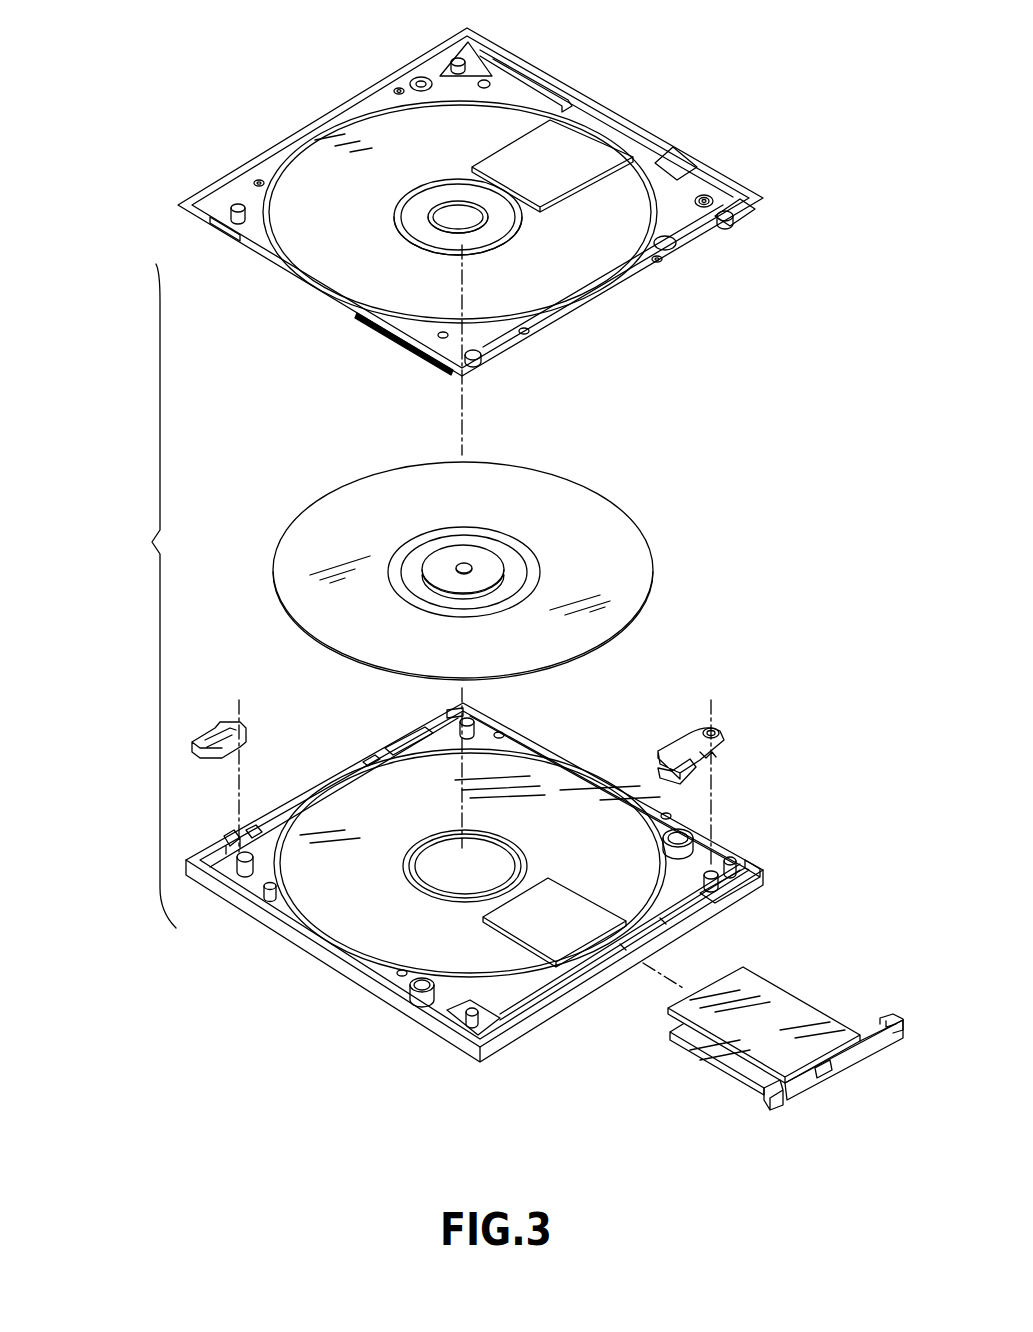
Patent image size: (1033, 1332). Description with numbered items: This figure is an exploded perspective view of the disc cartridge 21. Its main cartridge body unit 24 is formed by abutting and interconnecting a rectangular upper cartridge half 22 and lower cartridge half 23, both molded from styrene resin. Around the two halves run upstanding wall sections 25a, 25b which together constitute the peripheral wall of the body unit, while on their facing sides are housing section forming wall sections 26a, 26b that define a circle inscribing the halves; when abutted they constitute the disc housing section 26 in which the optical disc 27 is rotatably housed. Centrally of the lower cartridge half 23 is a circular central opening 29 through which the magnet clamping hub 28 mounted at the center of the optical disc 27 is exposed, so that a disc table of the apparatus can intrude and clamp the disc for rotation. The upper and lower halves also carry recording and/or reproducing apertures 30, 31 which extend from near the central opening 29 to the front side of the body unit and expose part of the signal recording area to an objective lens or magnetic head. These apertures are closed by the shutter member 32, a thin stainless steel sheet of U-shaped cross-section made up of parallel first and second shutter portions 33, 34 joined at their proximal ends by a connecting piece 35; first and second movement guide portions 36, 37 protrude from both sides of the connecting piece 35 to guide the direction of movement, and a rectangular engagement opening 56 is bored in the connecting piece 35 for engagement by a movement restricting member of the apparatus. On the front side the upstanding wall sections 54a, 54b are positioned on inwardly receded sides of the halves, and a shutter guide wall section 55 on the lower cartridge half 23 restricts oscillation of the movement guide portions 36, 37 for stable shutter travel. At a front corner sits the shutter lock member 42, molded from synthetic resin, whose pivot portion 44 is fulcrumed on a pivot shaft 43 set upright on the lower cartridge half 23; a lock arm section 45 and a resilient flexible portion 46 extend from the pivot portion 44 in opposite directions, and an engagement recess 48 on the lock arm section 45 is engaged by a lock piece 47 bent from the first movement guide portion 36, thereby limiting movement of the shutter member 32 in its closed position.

The disc cartridge 21 is at (778, 510).
The upper cartridge half 22 is at (460, 188).
The lower cartridge half 23 is at (490, 882).
The main cartridge body unit 24 is at (141, 557).
The upstanding wall section 25a is at (257, 163).
The upstanding wall section 25b is at (306, 938).
The disc housing section 26 is at (464, 557).
The housing section forming wall section 26a is at (270, 220).
The housing section forming wall section 26b is at (275, 858).
The optical disc 27 is at (492, 571).
The magnet clamping hub 28 is at (477, 555).
The central opening 29 is at (426, 868).
The recording and/or reproducing aperture 30 is at (507, 157).
The recording and/or reproducing aperture 31 is at (553, 878).
The shutter member 32 is at (781, 1049).
The first shutter portion 33 is at (792, 995).
The second shutter portion 34 is at (708, 1045).
The connecting piece 35 is at (797, 1095).
The first movement guide portion 36 is at (898, 1040).
The second movement guide portion 37 is at (778, 1103).
The shutter lock member 42 is at (704, 737).
The pivot shaft 43 is at (742, 897).
The pivot portion 44 is at (722, 734).
The lock arm section 45 is at (694, 766).
The resilient flexible portion 46 is at (678, 743).
The lock piece 47 is at (885, 1018).
The engagement recess 48 is at (715, 758).
The upstanding wall section 54a is at (497, 83).
The upstanding wall section 54b is at (507, 998).
The shutter guide wall section 55 is at (197, 733).
The engagement opening 56 is at (819, 1080).